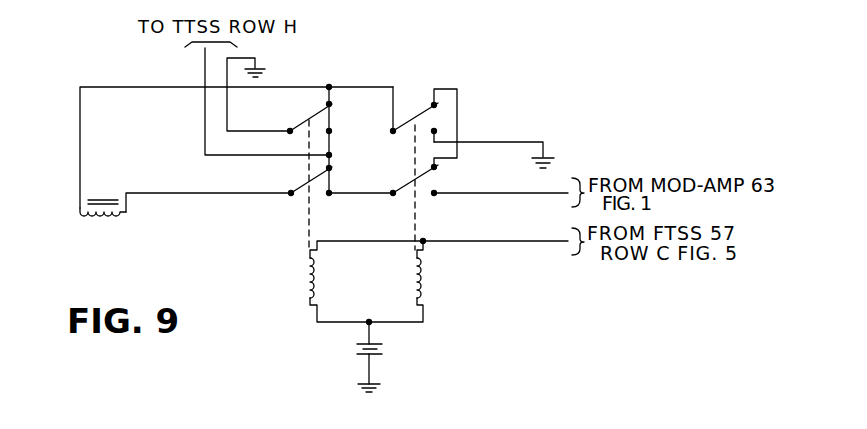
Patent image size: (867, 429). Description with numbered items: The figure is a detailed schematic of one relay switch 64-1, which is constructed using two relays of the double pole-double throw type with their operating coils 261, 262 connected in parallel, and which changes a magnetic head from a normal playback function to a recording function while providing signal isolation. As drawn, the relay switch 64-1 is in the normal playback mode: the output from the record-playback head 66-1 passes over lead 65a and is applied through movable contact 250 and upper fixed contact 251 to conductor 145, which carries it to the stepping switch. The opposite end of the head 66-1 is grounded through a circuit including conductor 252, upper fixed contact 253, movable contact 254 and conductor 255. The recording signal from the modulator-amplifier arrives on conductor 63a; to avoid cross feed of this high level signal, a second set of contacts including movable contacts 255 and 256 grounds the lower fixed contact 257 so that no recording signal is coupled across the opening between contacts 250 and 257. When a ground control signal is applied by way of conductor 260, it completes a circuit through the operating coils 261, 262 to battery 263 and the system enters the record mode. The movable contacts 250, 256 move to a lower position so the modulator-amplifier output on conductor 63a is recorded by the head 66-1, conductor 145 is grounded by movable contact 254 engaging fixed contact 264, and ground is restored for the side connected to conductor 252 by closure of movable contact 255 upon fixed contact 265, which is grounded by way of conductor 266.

The conductor 145 is at (205, 67).
The conductor 252 is at (169, 87).
The conductor / movable contact 255 is at (228, 119).
The movable contact 254 is at (307, 123).
The upper fixed contact 253 is at (331, 104).
The fixed contact 264 is at (331, 131).
The upper fixed contact 251 is at (331, 168).
The movable contact 250 is at (300, 186).
The lower fixed contact 257 is at (332, 190).
The movable contact 256 is at (406, 176).
The fixed contact 265 is at (436, 130).
The conductor 266 is at (492, 142).
The conductor 63a is at (468, 193).
The conductor 260 is at (510, 243).
The operating coil 261 is at (318, 277).
The operating coil 262 is at (424, 278).
The battery 263 is at (386, 354).
The relay switch 64-1 is at (558, 313).
The record-playback head 66-1 is at (80, 211).
The lead 65a is at (187, 194).